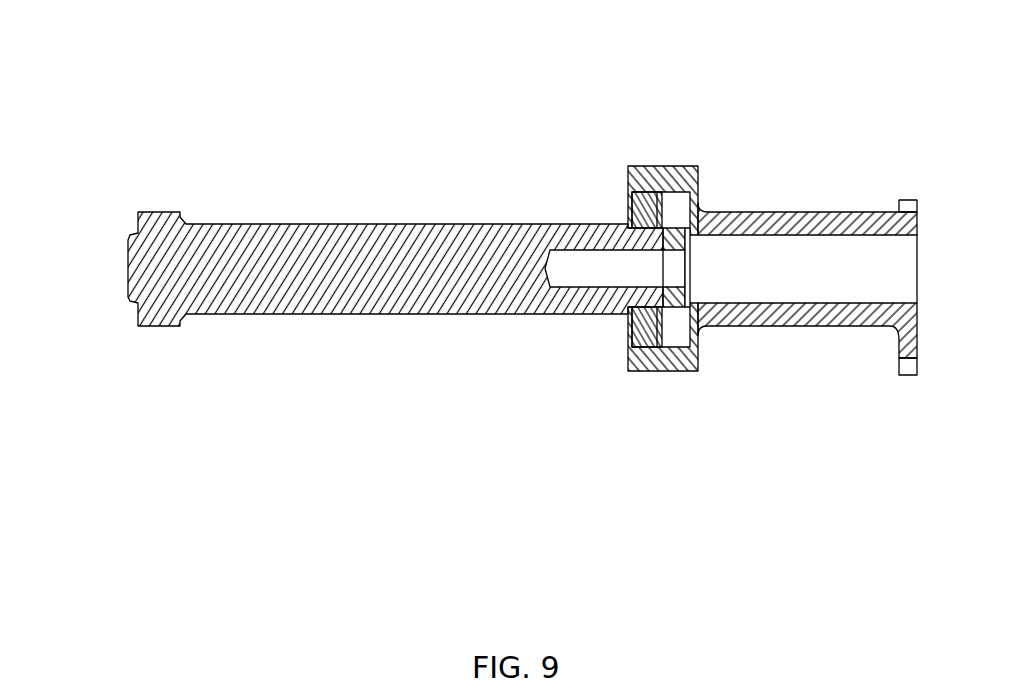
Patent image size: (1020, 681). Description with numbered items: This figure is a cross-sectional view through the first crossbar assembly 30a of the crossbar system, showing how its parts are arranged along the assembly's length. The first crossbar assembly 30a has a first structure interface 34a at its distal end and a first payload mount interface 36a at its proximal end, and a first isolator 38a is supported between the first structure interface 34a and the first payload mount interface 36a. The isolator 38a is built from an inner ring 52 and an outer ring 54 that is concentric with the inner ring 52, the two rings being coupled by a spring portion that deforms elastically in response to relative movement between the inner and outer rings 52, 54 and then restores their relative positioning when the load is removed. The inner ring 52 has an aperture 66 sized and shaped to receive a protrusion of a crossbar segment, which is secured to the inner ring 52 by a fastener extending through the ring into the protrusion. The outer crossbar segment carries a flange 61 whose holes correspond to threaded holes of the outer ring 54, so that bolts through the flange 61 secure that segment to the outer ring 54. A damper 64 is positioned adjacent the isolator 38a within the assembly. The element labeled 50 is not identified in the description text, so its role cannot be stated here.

The first crossbar assembly 30a is at (481, 244).
The first structure interface 34a is at (909, 368).
The first payload mount interface 36a is at (168, 285).
The first isolator 38a is at (670, 244).
The housing bottom wall 50 is at (661, 347).
The inner ring 52 is at (692, 308).
The outer ring 54 is at (656, 167).
The flange 61 is at (700, 190).
The damper 64 is at (628, 198).
The aperture 66 is at (625, 312).